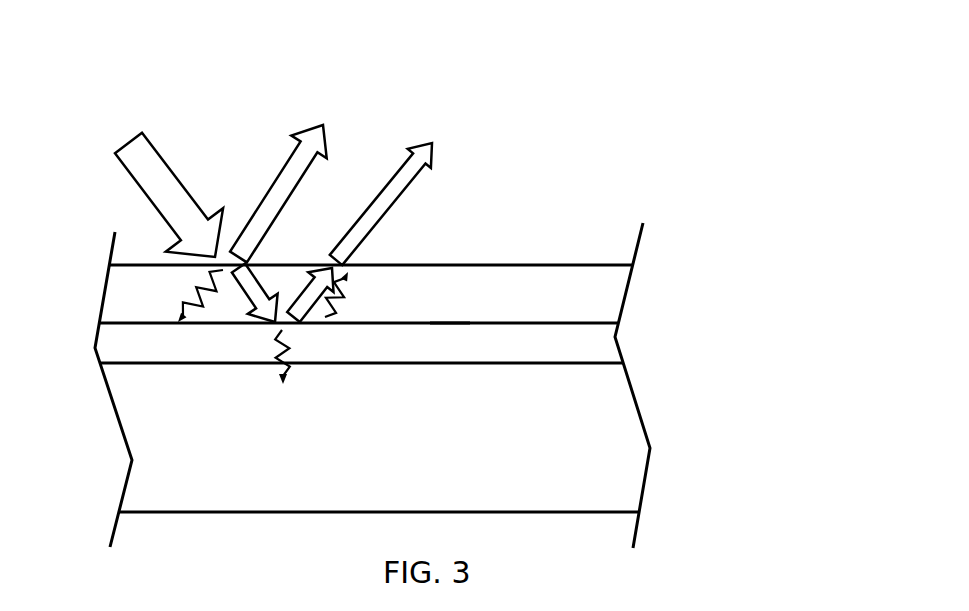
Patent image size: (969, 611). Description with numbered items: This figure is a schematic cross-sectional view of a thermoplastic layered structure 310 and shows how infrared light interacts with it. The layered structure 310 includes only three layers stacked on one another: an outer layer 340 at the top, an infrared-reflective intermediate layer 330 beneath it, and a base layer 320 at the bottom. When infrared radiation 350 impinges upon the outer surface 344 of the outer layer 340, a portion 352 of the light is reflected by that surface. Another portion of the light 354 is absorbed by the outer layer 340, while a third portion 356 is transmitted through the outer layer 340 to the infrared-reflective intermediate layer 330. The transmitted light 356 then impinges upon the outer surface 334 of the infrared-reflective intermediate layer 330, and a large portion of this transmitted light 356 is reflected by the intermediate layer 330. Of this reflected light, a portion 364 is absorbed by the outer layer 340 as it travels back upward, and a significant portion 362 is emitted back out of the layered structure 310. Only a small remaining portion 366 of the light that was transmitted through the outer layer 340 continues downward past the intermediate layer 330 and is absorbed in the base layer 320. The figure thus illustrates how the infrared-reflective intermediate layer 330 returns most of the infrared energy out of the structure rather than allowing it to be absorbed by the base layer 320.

The layered structure 310 is at (622, 152).
The base layer 320 is at (379, 465).
The infrared-reflective intermediate layer 330 is at (361, 348).
The outer surface of infrared-reflective intermediate layer 334 is at (460, 320).
The outer layer 340 is at (358, 303).
The outer surface of outer layer 344 is at (575, 265).
The infrared radiation 350 is at (140, 173).
The reflected portion of light 352 is at (277, 188).
The absorbed portion of light 354 is at (197, 288).
The transmitted light 356 is at (253, 293).
The emitted portion of reflected light 362 is at (370, 232).
The absorbed portion of reflected light 364 is at (328, 313).
The remaining portion of transmitted light 366 is at (295, 340).